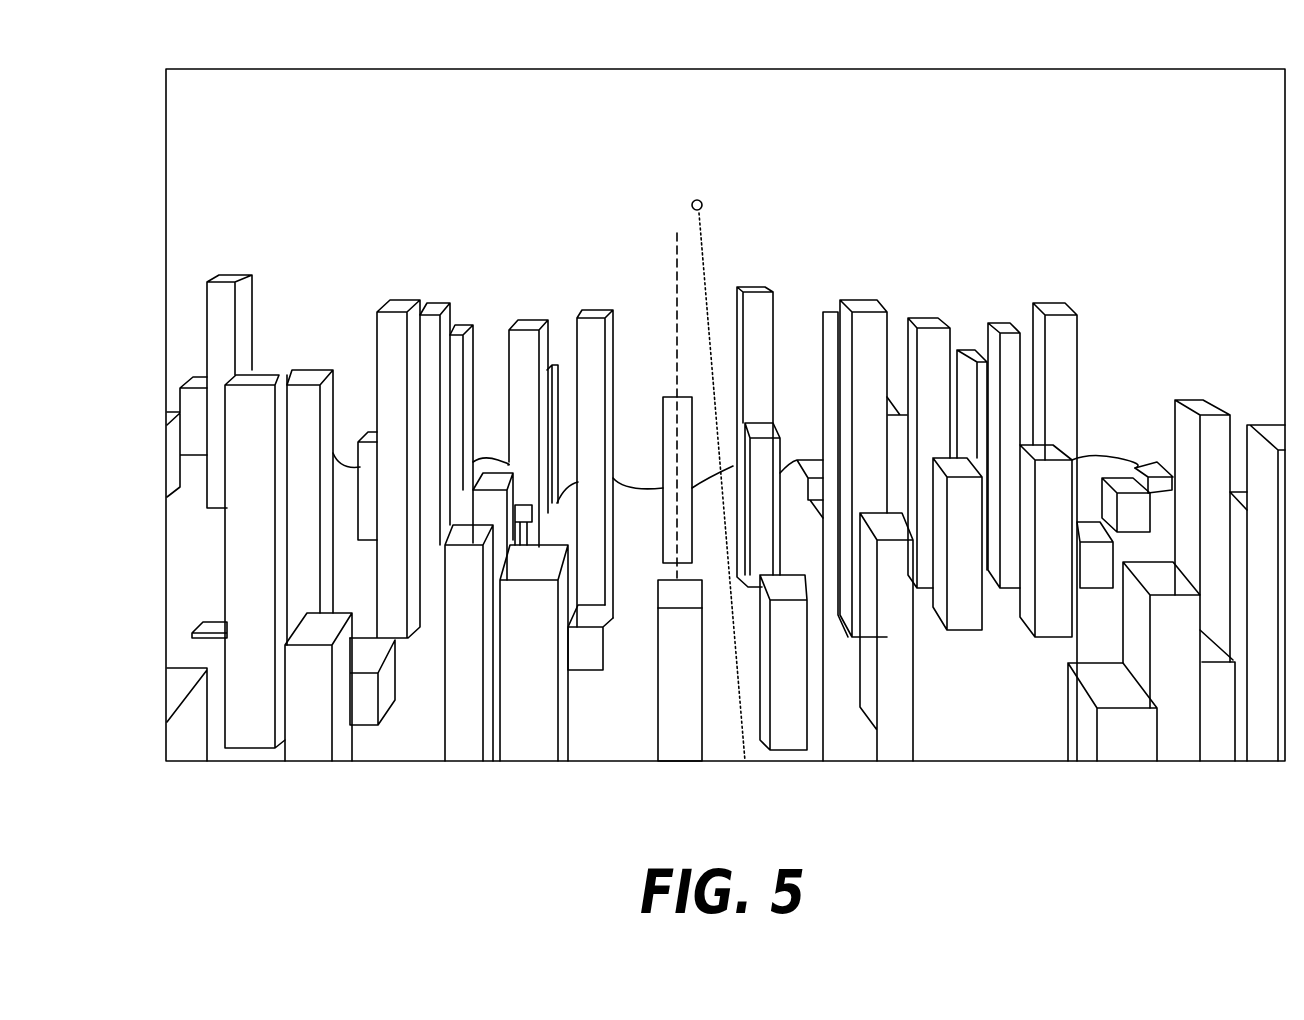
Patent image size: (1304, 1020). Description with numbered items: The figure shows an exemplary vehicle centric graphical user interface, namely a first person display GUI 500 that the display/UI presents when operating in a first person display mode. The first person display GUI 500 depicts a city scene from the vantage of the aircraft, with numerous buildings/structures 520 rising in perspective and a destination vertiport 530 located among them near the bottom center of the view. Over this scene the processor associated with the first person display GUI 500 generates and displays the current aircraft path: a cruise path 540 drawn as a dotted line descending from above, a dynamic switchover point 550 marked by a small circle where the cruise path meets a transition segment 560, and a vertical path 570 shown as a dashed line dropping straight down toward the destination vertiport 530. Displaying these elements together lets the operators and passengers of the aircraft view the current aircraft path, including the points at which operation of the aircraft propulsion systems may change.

The first person display GUI 500 is at (745, 30).
The buildings/structures 520 is at (406, 273).
The destination vertiport 530 is at (656, 742).
The cruise path 540 is at (700, 257).
The dynamic switchover point 550 is at (702, 204).
The transition segment 560 is at (688, 228).
The vertical path 570 is at (680, 272).